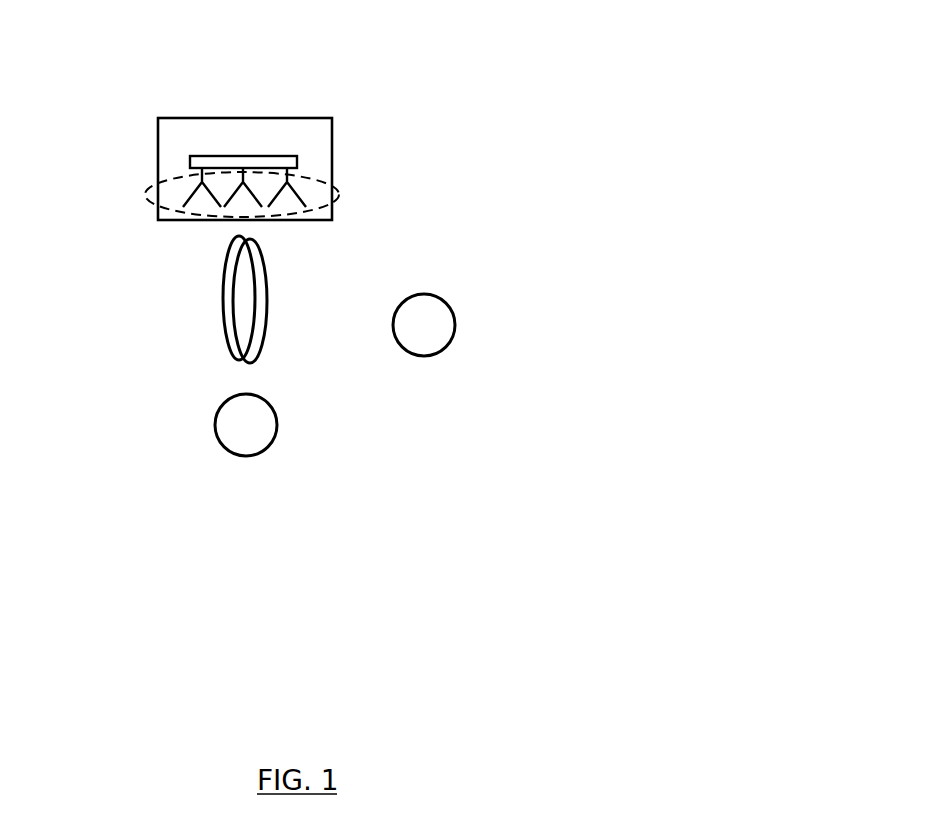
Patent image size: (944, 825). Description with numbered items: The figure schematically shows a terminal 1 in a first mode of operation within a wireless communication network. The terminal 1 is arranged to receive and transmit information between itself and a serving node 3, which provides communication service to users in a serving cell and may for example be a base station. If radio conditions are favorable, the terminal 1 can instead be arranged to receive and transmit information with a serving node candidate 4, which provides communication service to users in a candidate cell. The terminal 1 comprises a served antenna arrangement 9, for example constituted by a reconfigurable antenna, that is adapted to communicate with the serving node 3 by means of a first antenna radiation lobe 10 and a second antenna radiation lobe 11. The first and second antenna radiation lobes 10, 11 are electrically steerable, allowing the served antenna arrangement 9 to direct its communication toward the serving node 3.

The terminal 1 is at (332, 133).
The served antenna arrangement 9 is at (336, 191).
The first antenna radiation lobe 10 is at (224, 325).
The second antenna radiation lobe 11 is at (267, 332).
The serving node 3 is at (234, 434).
The serving node candidate 4 is at (432, 328).